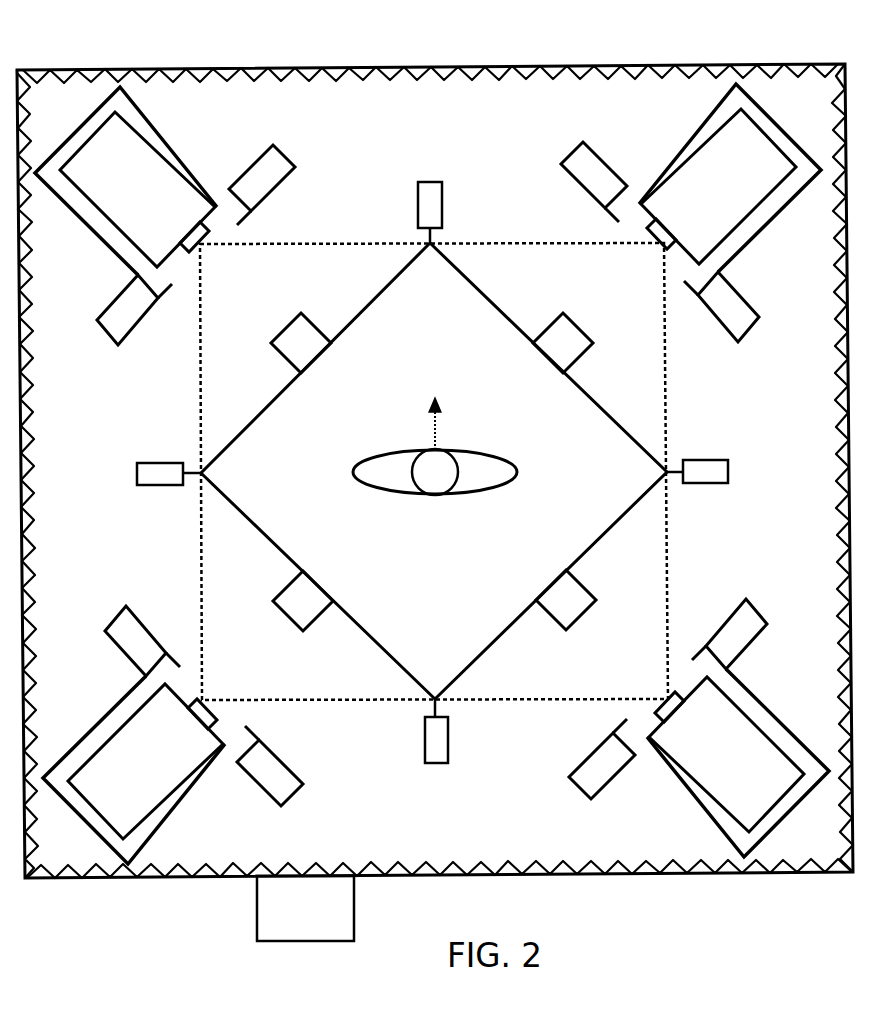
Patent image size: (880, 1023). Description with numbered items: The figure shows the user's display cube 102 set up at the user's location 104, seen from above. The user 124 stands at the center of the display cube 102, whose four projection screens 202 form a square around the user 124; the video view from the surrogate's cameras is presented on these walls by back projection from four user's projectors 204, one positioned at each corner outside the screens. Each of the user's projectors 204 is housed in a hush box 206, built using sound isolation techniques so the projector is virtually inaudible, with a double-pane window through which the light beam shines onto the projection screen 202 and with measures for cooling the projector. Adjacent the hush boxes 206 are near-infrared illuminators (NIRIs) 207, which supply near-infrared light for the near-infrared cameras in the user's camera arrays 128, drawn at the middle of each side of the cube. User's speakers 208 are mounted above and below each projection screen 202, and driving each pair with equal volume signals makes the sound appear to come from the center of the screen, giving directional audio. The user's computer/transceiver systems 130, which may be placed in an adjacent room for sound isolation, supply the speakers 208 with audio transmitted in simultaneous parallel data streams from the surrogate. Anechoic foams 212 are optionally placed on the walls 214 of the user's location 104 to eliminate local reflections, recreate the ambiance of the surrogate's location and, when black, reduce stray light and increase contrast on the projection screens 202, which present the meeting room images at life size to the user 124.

The user's display cube 102 is at (466, 327).
The user's location 104 is at (493, 114).
The user 124 is at (395, 490).
The user's camera arrays 128 is at (426, 181).
The user's computer/transceiver systems 130 is at (325, 920).
The projection screens 202 is at (342, 332).
The user's projectors 204 is at (432, 474).
The hush boxes 206 is at (44, 152).
The near-infrared illuminators (NIRIs) 207 is at (247, 167).
The user's speakers 208 is at (290, 362).
The anechoic foams 212 is at (567, 75).
The walls 214 is at (690, 64).